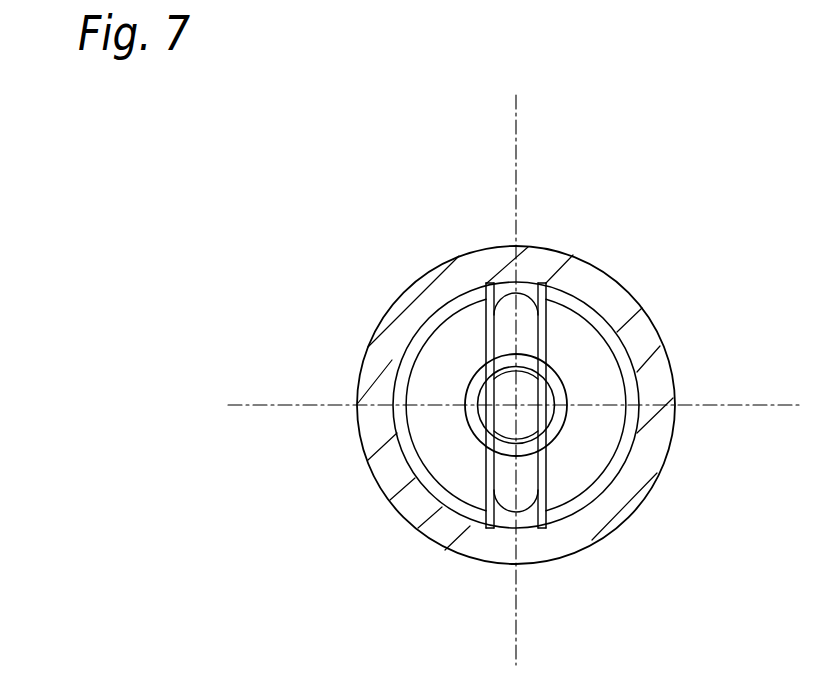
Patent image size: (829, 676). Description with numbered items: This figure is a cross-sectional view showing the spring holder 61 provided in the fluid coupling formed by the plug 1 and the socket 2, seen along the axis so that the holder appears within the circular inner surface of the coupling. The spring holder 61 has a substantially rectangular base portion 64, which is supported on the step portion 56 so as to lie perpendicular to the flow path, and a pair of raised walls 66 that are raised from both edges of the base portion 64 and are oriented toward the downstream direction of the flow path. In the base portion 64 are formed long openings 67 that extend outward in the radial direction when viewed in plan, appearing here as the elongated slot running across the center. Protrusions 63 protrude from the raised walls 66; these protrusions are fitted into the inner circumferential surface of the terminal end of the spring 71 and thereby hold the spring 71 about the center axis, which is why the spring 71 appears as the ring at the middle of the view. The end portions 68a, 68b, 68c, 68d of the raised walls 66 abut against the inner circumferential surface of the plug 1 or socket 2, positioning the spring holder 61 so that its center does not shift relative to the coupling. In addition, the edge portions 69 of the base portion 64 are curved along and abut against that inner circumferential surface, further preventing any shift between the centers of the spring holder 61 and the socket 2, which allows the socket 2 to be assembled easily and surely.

The plug 1 is at (516, 368).
The socket 2 is at (458, 253).
The step portion 56 is at (428, 337).
The spring holder 61 is at (549, 321).
The protrusions 63 is at (478, 395).
The base portion 64 is at (478, 518).
The raised walls 66 is at (488, 488).
The long openings 67 is at (539, 283).
The end portion 68a is at (489, 282).
The end portion 68b is at (547, 284).
The slot corner 68c is at (546, 530).
The slot corner 68d is at (490, 530).
The edge portions 69 is at (522, 282).
The spring 71 is at (558, 378).